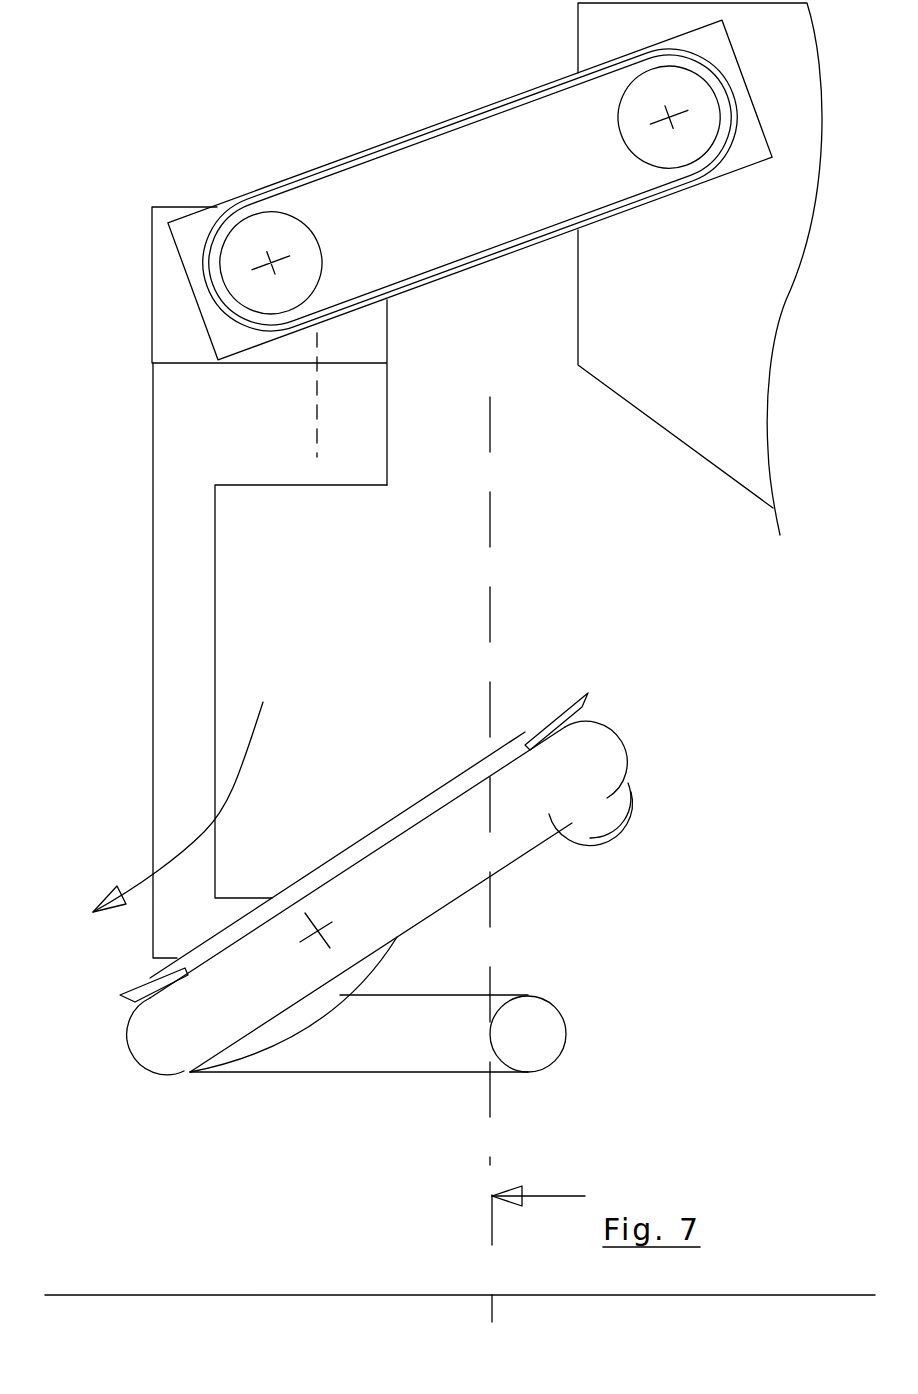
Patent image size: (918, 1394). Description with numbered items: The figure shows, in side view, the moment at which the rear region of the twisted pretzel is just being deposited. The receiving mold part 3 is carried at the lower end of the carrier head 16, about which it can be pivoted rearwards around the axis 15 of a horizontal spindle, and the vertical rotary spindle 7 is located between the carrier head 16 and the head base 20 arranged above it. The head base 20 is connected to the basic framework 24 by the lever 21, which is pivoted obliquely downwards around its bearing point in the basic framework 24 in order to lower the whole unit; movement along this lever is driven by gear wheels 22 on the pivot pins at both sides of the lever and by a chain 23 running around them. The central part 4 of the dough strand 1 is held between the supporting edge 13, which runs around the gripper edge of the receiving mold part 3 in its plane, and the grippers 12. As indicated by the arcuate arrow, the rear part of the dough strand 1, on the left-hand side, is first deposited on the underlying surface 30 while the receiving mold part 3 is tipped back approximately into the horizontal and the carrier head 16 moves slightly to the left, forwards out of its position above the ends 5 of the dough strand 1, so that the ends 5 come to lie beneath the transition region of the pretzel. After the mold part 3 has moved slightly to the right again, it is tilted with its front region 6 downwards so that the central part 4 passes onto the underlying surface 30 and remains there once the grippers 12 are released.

The dough strand 1 is at (205, 1036).
The receiving mold part 3 is at (370, 842).
The central part 4 is at (574, 773).
The ends 5 is at (407, 1044).
The front region 6 is at (513, 750).
The vertical rotary spindle 7 is at (317, 421).
The gripper 12 is at (600, 823).
The supporting edge 13 is at (145, 988).
The axis 15 is at (318, 932).
The carrier head 16 is at (167, 598).
The head base 20 is at (162, 307).
The lever 21 is at (195, 228).
The gear wheels 22 is at (298, 268).
The chain 23 is at (402, 163).
The basic framework 24 is at (672, 366).
The underlying surface 30 is at (197, 1295).